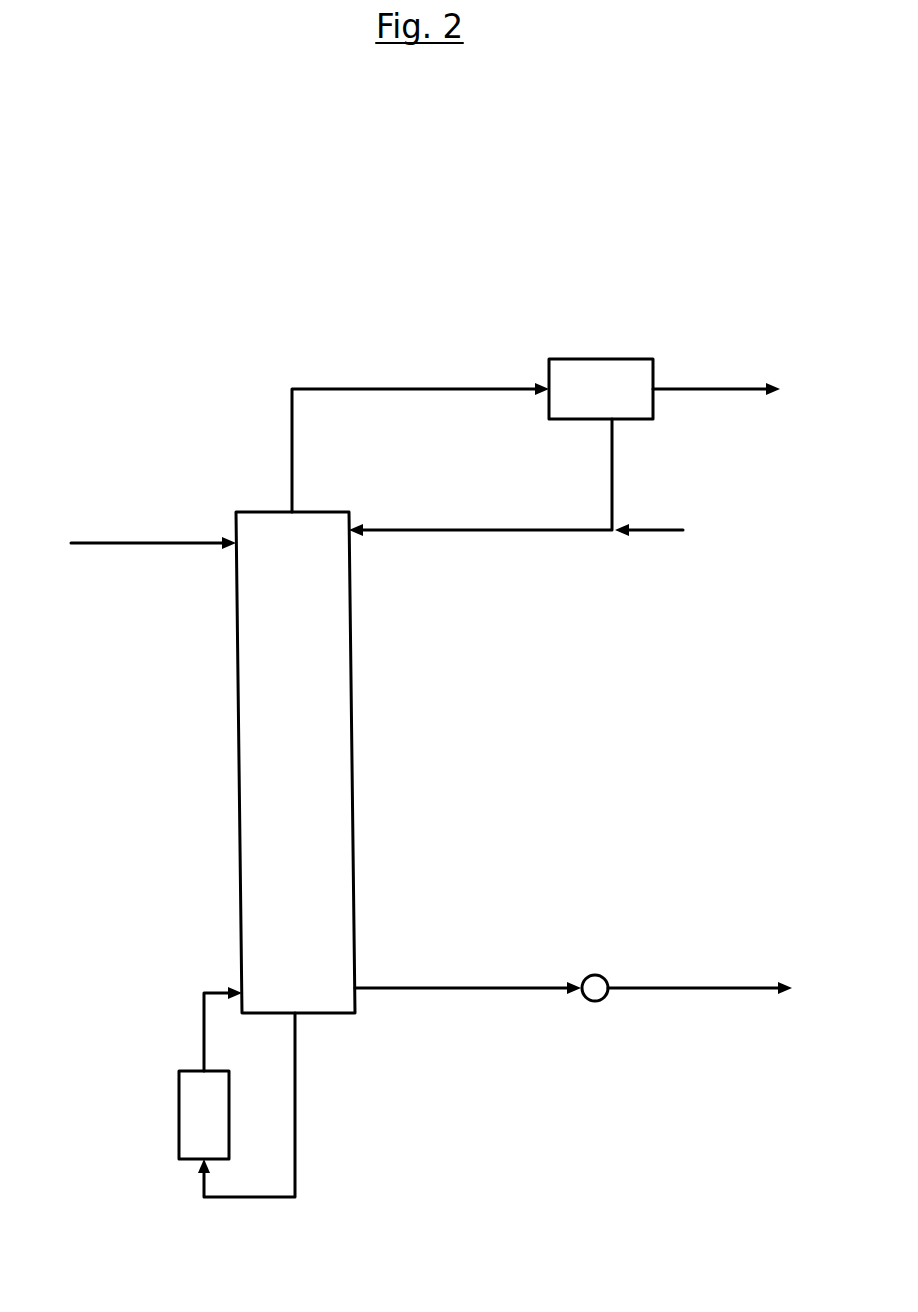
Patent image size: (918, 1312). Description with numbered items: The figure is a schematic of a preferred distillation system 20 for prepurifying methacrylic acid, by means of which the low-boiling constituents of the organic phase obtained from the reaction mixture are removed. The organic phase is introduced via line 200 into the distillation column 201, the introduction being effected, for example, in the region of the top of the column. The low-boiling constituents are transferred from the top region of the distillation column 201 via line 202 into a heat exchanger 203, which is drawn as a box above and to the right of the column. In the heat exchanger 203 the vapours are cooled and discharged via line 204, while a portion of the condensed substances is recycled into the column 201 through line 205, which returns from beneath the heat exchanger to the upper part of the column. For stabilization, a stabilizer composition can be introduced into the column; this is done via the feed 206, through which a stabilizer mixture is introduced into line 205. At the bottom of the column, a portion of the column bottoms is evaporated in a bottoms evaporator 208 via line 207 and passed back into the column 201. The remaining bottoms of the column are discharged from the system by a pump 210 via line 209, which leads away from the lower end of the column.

The distillation system 20 is at (162, 159).
The line 200 is at (153, 543).
The distillation column 201 is at (265, 778).
The line 202 is at (408, 389).
The heat exchanger 203 is at (603, 388).
The line 204 is at (738, 389).
The line 205 is at (428, 533).
The feed 206 is at (652, 533).
The line 207 is at (295, 1072).
The bottoms evaporator 208 is at (204, 1112).
The line 209 is at (450, 990).
The pump 210 is at (595, 985).